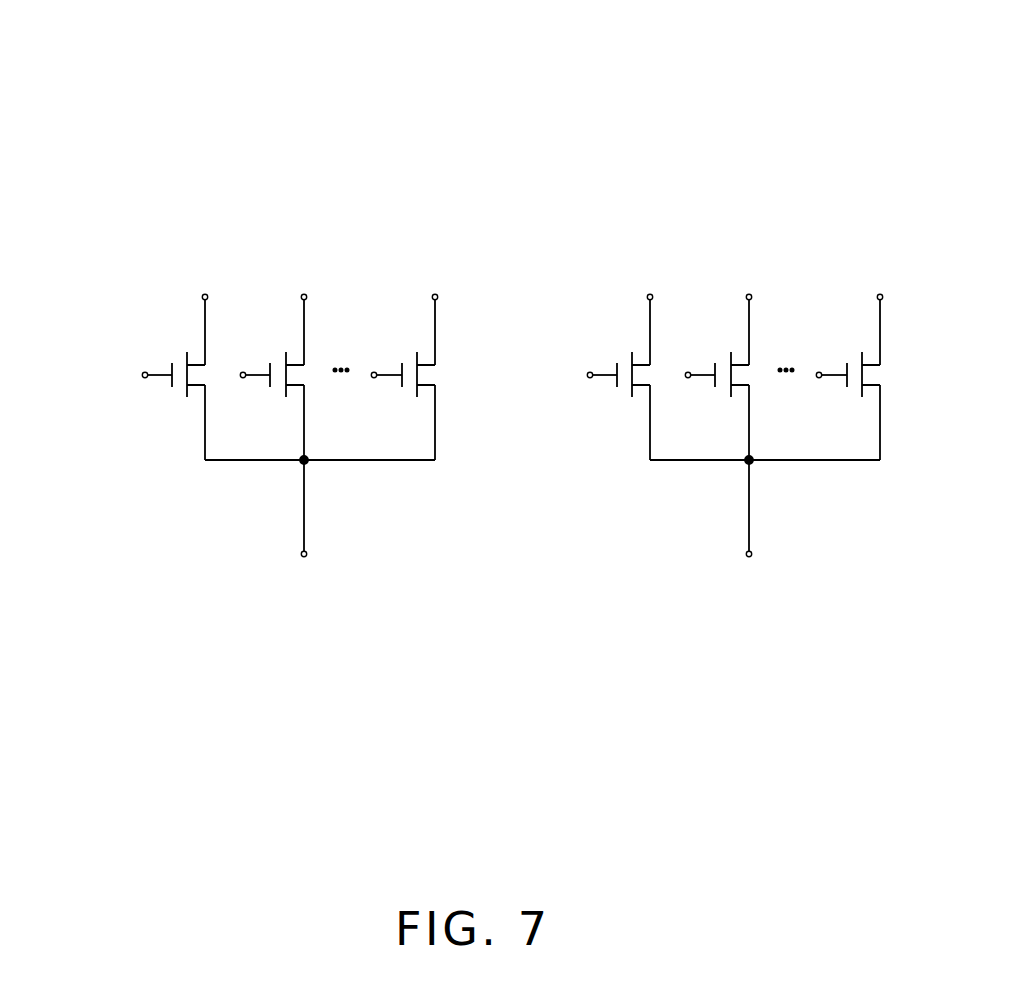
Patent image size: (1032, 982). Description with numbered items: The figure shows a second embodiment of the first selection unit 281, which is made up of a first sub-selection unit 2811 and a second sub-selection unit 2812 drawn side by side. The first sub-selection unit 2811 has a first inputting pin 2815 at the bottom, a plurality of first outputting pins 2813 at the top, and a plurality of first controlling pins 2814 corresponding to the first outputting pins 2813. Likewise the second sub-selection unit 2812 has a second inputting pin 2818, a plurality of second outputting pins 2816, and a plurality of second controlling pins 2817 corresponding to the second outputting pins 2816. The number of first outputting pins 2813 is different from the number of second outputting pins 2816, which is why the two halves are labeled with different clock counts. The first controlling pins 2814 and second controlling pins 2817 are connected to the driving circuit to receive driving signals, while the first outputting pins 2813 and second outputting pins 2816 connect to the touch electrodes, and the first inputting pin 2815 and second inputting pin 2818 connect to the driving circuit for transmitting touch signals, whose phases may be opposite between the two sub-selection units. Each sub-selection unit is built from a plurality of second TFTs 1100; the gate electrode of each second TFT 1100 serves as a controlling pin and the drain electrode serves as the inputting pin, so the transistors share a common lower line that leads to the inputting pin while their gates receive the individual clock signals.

The first selection unit 281 is at (462, 81).
The first sub-selection unit 2811 is at (297, 241).
The second sub-selection unit 2812 is at (742, 241).
The first outputting pin 2813 is at (203, 294).
The first controlling pin 2814 is at (144, 372).
The first inputting pin 2815 is at (302, 560).
The second outputting pin 2816 is at (600, 309).
The second controlling pin 2817 is at (562, 360).
The second inputting pin 2818 is at (693, 529).
The second TFT 1100 is at (400, 362).